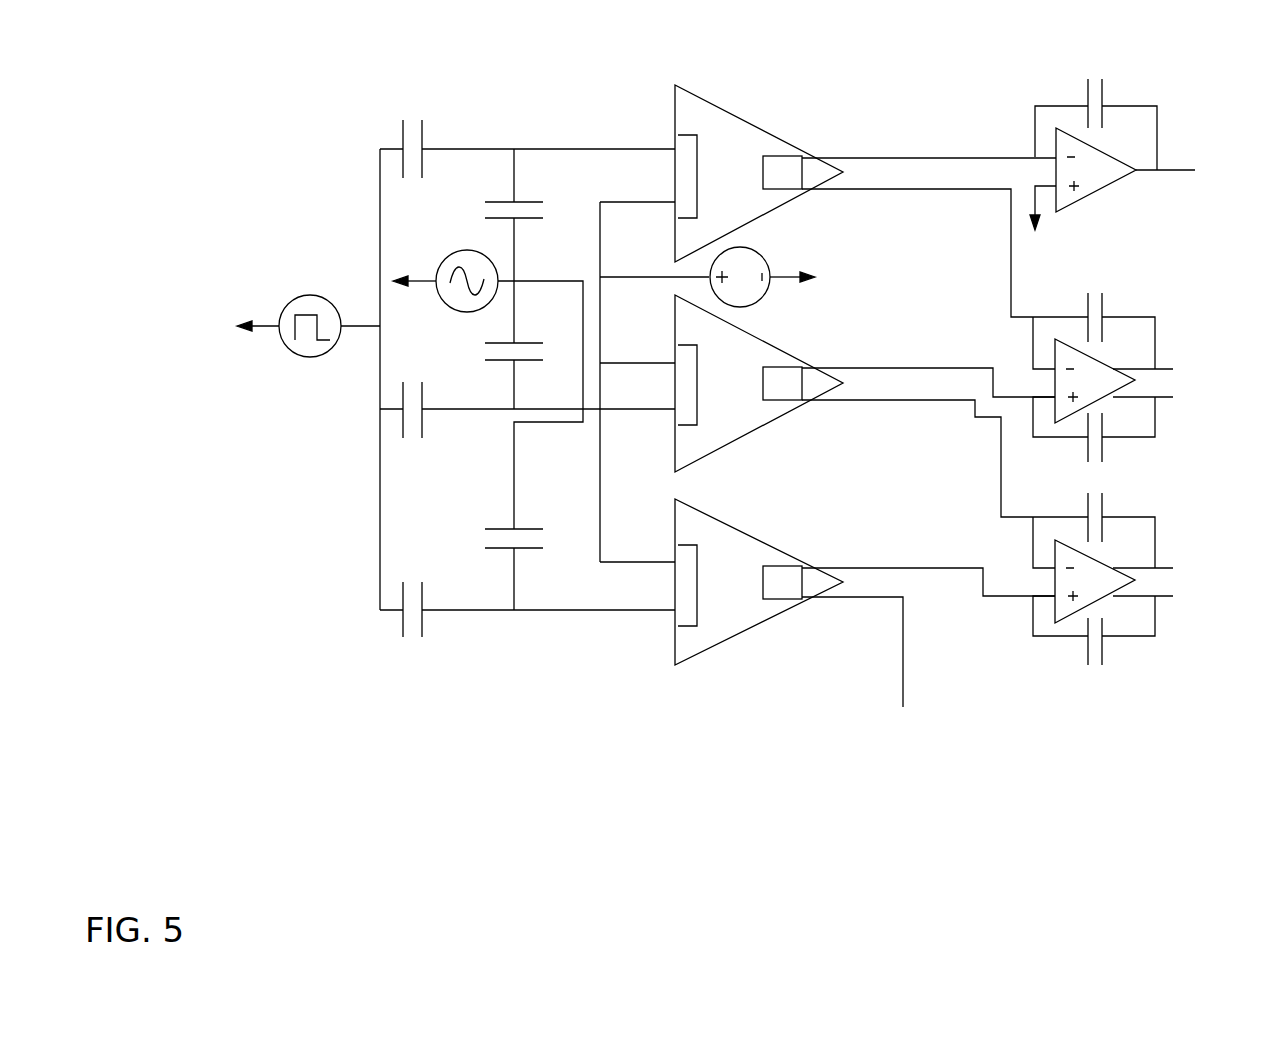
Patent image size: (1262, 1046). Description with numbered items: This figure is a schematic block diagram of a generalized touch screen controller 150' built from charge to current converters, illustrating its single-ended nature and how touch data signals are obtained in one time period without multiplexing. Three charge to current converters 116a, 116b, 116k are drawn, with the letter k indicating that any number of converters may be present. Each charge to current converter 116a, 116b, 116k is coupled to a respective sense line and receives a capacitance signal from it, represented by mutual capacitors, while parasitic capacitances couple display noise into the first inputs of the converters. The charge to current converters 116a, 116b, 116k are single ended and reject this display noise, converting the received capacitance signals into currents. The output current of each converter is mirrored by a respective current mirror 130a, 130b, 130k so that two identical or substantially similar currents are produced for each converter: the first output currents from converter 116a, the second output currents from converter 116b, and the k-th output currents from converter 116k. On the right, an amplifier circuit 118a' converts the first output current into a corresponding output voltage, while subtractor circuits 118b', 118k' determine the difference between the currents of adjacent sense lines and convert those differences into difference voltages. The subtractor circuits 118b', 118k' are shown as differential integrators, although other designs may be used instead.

The touch screen controller 150' is at (742, 365).
The charge to current converter 116a is at (759, 173).
The charge to current converter 116b is at (765, 383).
The charge to current converter 116k is at (762, 582).
The current mirror 130a is at (768, 155).
The current mirror 130b is at (788, 363).
The current mirror 130k is at (787, 565).
The amplifier circuit 118a' is at (1115, 135).
The subtractor circuit 118b' is at (1123, 358).
The subtractor circuit 118k' is at (1123, 563).